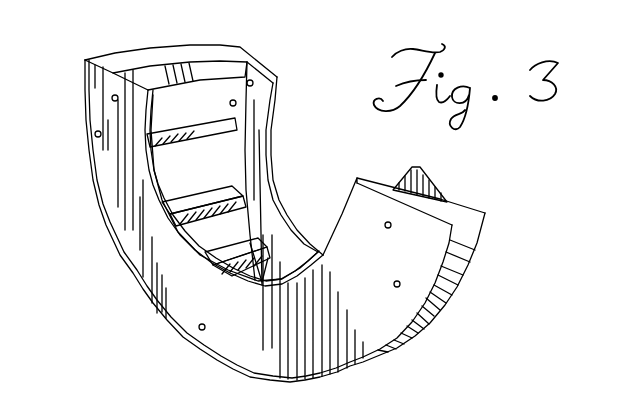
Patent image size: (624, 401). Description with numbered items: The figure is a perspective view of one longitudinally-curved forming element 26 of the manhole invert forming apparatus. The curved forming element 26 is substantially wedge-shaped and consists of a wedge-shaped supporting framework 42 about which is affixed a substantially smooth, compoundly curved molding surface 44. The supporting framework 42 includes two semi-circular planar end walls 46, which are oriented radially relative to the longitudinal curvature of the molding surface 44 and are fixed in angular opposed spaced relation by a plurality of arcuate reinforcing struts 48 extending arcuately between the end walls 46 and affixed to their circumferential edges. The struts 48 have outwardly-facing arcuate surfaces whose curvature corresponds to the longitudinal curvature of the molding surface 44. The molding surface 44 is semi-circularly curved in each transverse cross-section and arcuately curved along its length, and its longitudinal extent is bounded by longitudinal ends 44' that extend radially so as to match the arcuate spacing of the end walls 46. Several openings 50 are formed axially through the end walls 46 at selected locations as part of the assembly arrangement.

The curved forming element 26 is at (100, 200).
The supporting framework 42 is at (270, 215).
The molding surface 44 is at (304, 186).
The longitudinal ends 44' is at (273, 316).
The end walls 46 is at (270, 156).
The arcuate reinforcing struts 48 is at (225, 50).
The openings 50 is at (94, 134).